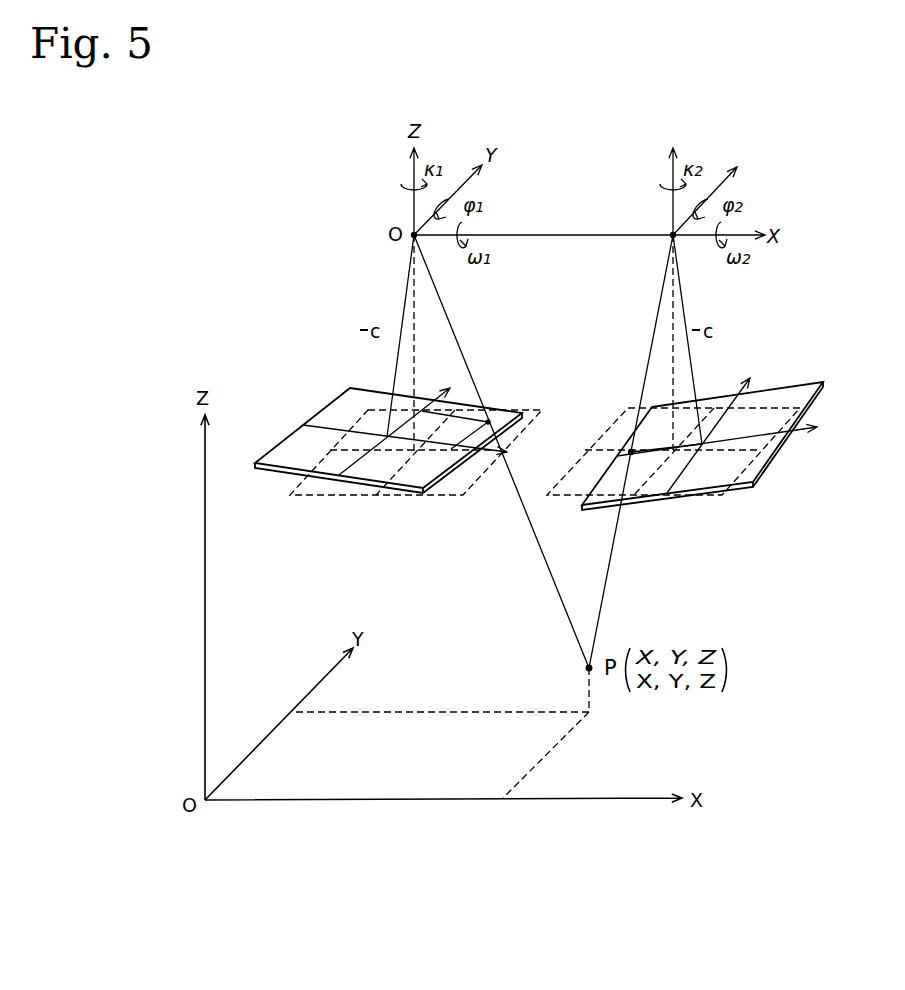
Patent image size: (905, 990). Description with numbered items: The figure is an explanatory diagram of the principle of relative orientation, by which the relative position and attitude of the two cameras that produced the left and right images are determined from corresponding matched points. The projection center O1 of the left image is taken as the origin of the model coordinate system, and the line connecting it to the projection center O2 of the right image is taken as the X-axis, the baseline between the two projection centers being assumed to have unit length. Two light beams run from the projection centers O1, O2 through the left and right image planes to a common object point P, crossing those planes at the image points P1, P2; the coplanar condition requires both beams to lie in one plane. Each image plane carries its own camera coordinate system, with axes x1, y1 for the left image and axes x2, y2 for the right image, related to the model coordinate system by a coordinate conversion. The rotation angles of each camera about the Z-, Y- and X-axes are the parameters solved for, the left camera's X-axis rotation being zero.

The projection center in the left image O1 is at (583, 203).
The projection center in the right image O2 is at (698, 203).
The image point of the object point in the left image P1 is at (466, 415).
The image point of the object point in the right image P2 is at (666, 436).
The x-axis of the camera coordinate system for the left image x1 is at (417, 445).
The y-axis of the camera coordinate system for the left image y1 is at (397, 417).
The x-axis of the camera coordinate system for the right image x2 is at (731, 436).
The y-axis of the camera coordinate system for the right image y2 is at (714, 425).